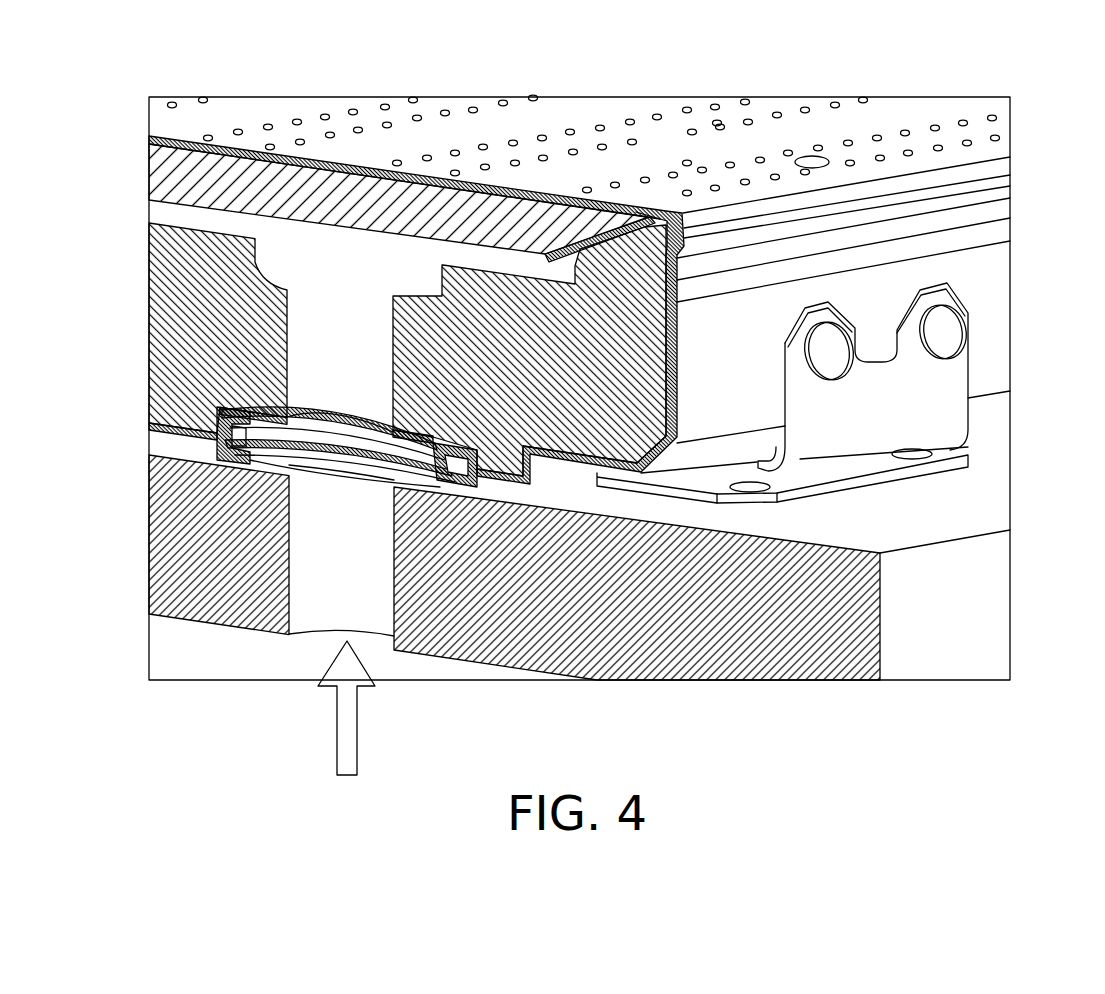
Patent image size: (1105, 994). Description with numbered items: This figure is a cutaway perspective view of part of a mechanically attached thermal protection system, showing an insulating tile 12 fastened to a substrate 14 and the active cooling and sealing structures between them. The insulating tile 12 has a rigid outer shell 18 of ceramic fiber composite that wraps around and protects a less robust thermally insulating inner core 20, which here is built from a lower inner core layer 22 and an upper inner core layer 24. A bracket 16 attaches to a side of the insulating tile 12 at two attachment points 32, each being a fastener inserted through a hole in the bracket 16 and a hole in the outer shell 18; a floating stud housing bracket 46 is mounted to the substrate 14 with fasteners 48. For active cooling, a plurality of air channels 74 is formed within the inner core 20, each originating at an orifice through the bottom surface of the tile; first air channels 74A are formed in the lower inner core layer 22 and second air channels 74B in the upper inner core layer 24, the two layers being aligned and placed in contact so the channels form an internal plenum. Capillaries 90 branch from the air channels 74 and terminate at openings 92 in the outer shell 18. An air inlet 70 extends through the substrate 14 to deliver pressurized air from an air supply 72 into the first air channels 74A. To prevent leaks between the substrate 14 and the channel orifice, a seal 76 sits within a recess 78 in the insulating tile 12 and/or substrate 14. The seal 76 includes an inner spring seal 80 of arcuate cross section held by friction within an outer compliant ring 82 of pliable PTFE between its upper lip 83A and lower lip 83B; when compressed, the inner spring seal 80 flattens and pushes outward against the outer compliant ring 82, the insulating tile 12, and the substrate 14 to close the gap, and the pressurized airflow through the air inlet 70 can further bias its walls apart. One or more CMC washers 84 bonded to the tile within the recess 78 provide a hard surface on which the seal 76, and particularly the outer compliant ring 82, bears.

The insulating tile 12 is at (968, 105).
The substrate 14 is at (985, 648).
The bracket 16 is at (943, 400).
The outer shell 18 is at (985, 272).
The inner core 20 is at (363, 223).
The lower inner core layer 22 is at (616, 434).
The upper inner core layer 24 is at (616, 274).
The attachment point 32 is at (832, 351).
The housing bracket 46 is at (839, 509).
The fastener 48 is at (967, 462).
The air inlet 70 is at (317, 568).
The air supply 72 is at (343, 735).
The air channel 74 is at (398, 223).
The first air channel 74A is at (320, 315).
The second air channel 74B is at (528, 265).
The seal 76 is at (218, 448).
The recess 78 is at (436, 442).
The inner spring seal 80 is at (228, 470).
The outer compliant ring 82 is at (205, 440).
The upper lip 83A is at (308, 430).
The lower lip 83B is at (284, 453).
The washer 84 is at (343, 417).
The capillary 90 is at (577, 258).
The opening 92 is at (641, 205).